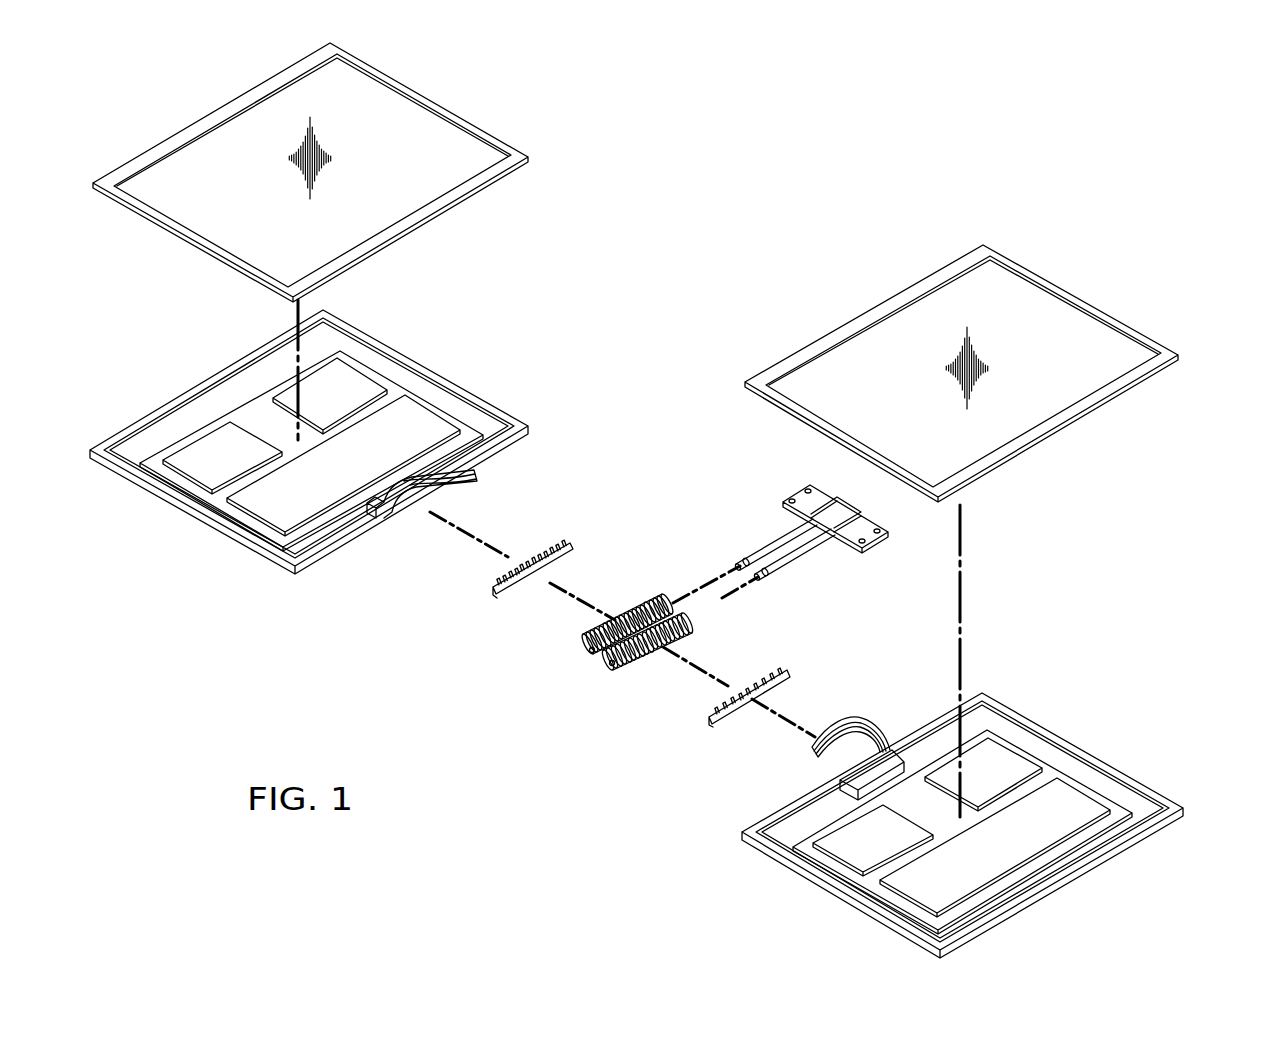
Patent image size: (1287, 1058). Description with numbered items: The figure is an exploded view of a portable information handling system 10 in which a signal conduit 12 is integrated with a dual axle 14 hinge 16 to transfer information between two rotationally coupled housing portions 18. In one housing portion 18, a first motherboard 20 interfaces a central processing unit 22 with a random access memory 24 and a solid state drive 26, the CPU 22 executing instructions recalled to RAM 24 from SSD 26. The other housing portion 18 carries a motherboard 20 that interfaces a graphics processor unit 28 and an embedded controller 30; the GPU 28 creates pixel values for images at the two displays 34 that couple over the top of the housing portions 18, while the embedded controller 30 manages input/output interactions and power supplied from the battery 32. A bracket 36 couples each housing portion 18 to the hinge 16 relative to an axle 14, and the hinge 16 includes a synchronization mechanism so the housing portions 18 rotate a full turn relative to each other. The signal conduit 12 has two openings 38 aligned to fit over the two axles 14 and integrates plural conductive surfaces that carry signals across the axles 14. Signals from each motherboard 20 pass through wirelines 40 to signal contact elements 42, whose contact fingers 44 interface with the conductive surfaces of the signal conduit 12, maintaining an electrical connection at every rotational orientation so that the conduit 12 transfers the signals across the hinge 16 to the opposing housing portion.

The portable information handling system 10 is at (906, 180).
The signal conduit 12 is at (626, 613).
The axle 14 is at (773, 522).
The hinge 16 is at (825, 563).
The housing portion 18 is at (190, 523).
The motherboard 20 is at (1173, 708).
The central processing unit 22 is at (190, 457).
The random access memory 24 is at (367, 388).
The solid state drive 26 is at (410, 410).
The graphics processor unit 28 is at (837, 842).
The embedded controller 30 is at (1005, 760).
The battery 32 is at (1070, 795).
The display 34 is at (860, 363).
The bracket 36 is at (870, 548).
The opening 38 is at (597, 650).
The wireline 40 is at (417, 507).
The signal contact element 42 is at (497, 588).
The contact finger 44 is at (590, 768).